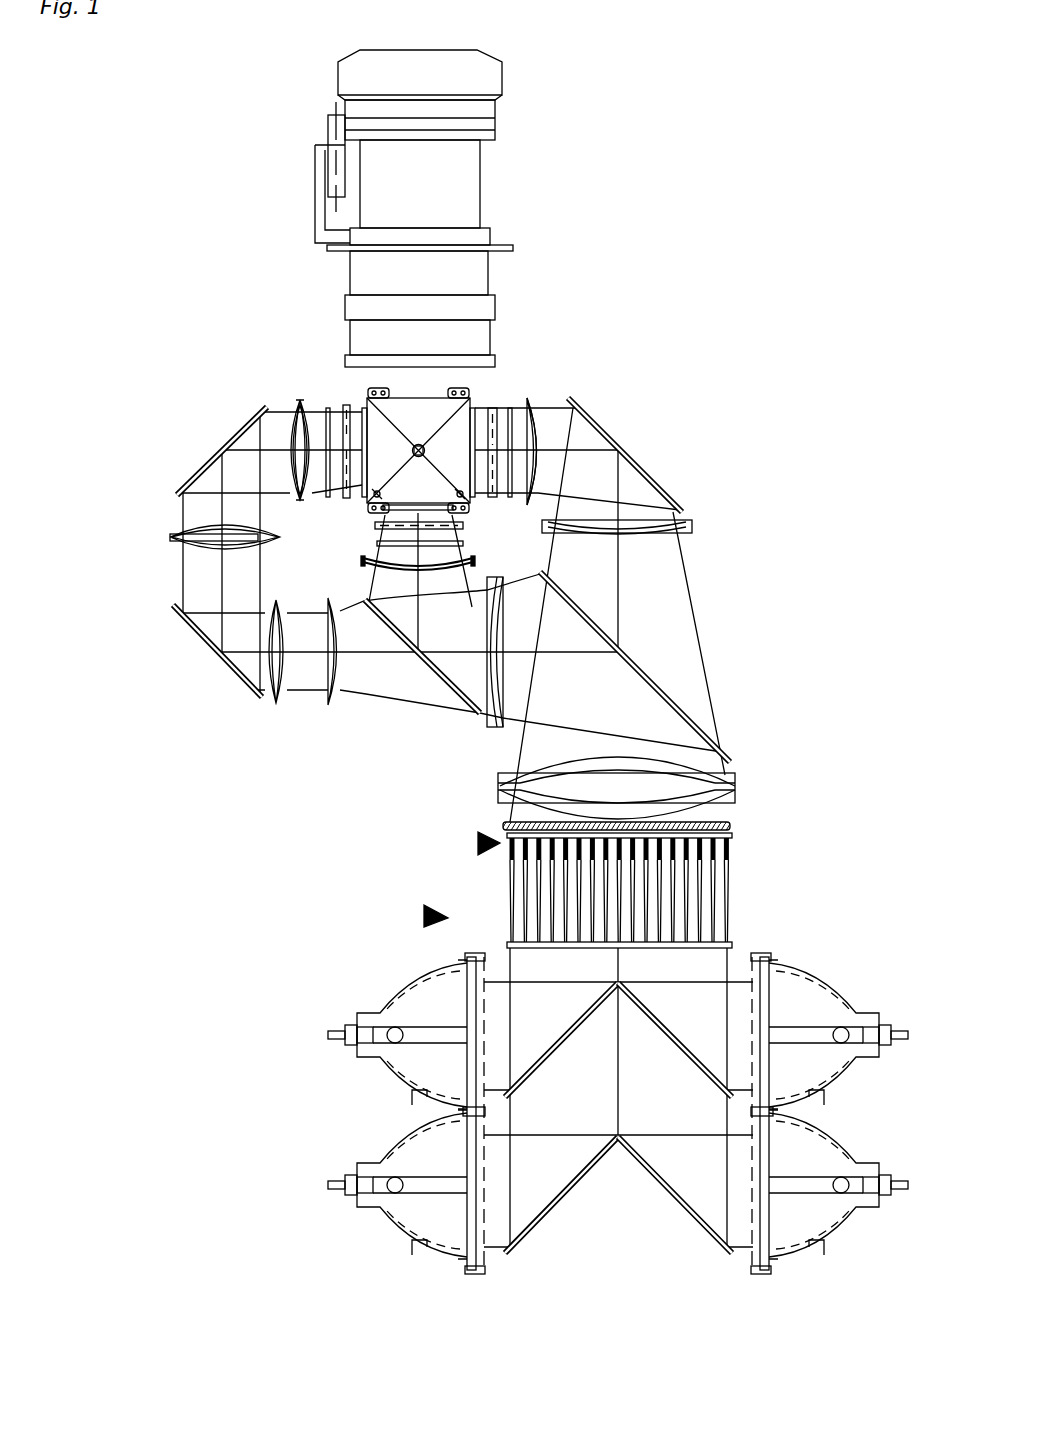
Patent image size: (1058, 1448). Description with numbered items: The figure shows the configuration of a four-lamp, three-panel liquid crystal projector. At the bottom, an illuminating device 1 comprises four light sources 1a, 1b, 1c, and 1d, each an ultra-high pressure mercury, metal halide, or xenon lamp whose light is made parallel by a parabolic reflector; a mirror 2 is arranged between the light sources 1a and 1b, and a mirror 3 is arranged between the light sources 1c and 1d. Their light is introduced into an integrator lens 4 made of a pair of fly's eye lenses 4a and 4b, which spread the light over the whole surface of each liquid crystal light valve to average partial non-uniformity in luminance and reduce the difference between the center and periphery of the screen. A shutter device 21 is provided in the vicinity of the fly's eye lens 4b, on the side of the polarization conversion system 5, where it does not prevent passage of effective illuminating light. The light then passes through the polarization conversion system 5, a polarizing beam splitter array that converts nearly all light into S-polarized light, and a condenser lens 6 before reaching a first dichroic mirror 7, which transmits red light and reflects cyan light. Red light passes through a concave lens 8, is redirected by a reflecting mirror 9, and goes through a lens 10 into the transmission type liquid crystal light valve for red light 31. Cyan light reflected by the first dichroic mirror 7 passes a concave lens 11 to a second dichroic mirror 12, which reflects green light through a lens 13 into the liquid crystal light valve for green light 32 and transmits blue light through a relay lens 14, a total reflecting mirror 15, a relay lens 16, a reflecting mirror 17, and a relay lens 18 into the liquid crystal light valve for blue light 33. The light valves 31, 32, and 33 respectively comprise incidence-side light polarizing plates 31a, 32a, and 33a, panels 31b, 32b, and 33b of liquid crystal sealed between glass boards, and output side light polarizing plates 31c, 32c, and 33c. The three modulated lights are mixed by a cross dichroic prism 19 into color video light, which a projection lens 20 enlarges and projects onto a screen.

The illuminating device 1 is at (424, 912).
The light source 1a is at (874, 1012).
The light source 1b is at (362, 1012).
The light source 1c is at (874, 1162).
The light source 1d is at (362, 1162).
The mirror 2 is at (542, 1068).
The mirror 3 is at (680, 1200).
The integrator lens 4 is at (663, 890).
The fly's eye lens 4a is at (648, 925).
The fly's eye lens 4b is at (733, 838).
The polarization conversion system 5 is at (733, 826).
The condenser lens 6 is at (737, 789).
The first dichroic mirror 7 is at (735, 729).
The concave lens 8 is at (694, 528).
The reflecting mirror 9 is at (606, 437).
The lens 10 is at (540, 400).
The concave lens 11 is at (495, 732).
The second dichroic mirror 12 is at (440, 684).
The lens 13 is at (470, 560).
The relay lens 14 is at (340, 710).
The total reflecting mirror 15 is at (208, 642).
The relay lens 16 is at (170, 537).
The reflecting mirror 17 is at (236, 438).
The relay lens 18 is at (292, 406).
The cross dichroic prism 19 is at (418, 400).
The projection lens 20 is at (480, 184).
The shutter device 21 is at (478, 843).
The transmission type liquid crystal light valve for red light 31 is at (538, 415).
The incidence-side light polarizing plate 31a is at (557, 432).
The panel 31b is at (511, 407).
The output side light polarizing plate 31c is at (493, 407).
The transmission type liquid crystal light valve for green light 32 is at (374, 530).
The incidence-side light polarizing plate 32a is at (378, 543).
The panel 32b is at (375, 526).
The output side light polarizing plate 32c is at (382, 508).
The transmission type liquid crystal light valve for blue light 33 is at (284, 411).
The incidence-side light polarizing plate 33a is at (298, 400).
The panel 33b is at (327, 405).
The output side light polarizing plate 33c is at (329, 427).